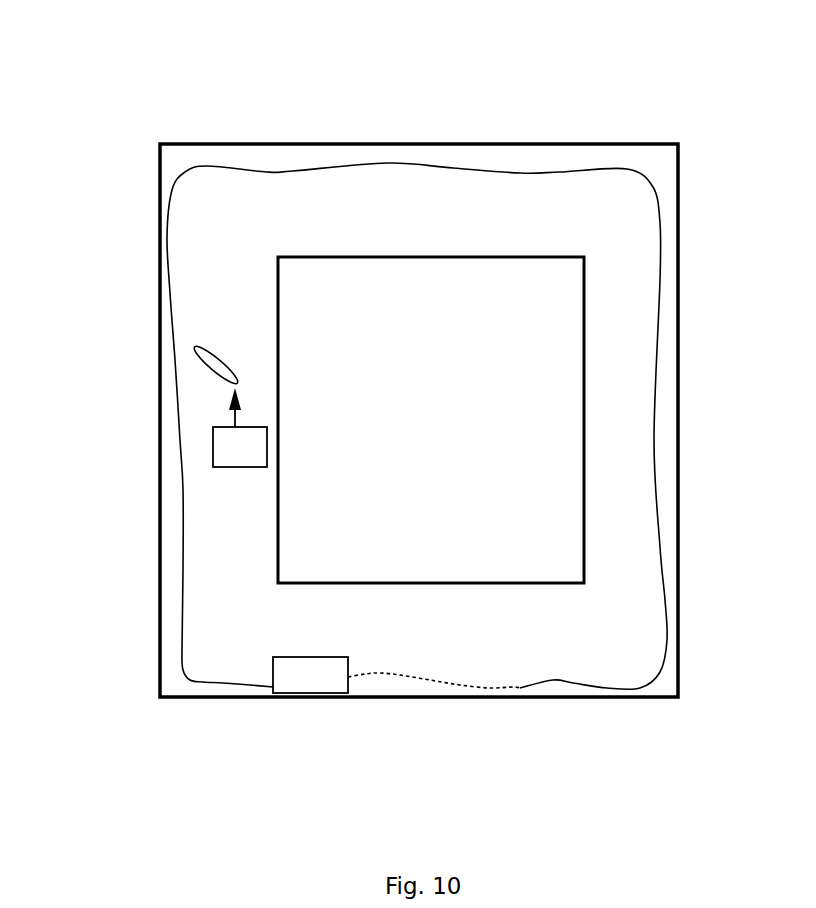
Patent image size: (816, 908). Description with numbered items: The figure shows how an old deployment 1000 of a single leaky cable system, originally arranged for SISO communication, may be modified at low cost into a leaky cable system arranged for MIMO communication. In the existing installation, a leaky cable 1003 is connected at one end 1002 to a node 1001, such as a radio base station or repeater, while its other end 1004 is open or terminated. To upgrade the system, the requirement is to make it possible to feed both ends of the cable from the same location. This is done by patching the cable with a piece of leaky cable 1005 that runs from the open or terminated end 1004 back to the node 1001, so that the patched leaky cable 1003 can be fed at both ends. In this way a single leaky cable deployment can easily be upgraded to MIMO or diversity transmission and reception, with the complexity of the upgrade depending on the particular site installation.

The old deployment 1000 is at (164, 71).
The node 1001 is at (318, 688).
The end connected to node 1002 is at (222, 683).
The leaky cable 1003 is at (183, 573).
The open or terminated end 1004 is at (558, 680).
The piece of leaky cable 1005 is at (440, 680).